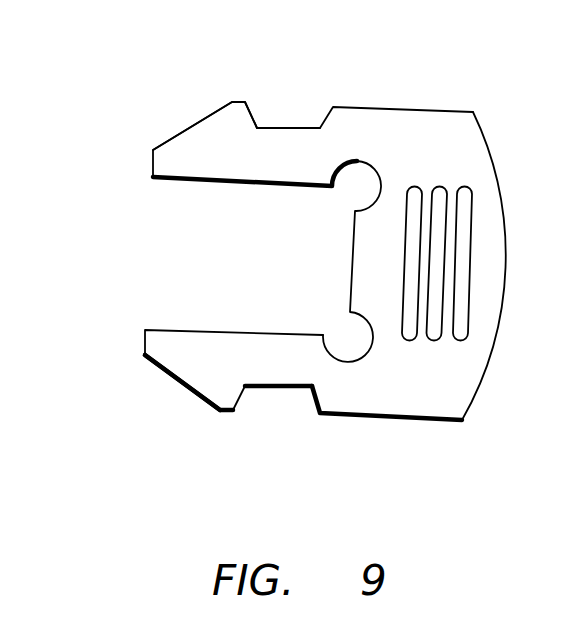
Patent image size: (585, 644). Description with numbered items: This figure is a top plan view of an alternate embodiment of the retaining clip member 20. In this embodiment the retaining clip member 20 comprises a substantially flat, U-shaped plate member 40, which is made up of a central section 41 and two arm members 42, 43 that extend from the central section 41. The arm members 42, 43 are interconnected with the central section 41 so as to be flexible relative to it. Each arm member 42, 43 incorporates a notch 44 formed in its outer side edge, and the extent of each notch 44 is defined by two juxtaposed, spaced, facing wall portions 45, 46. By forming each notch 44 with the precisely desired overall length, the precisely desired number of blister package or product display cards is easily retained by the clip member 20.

The retaining clip member 20 is at (187, 410).
The U-shaped plate member 40 is at (448, 128).
The central section 41 is at (438, 370).
The arm member 42 is at (168, 381).
The arm member 43 is at (198, 120).
The notch 44 is at (282, 128).
The wall portion 45 is at (245, 398).
The wall portion 46 is at (310, 410).